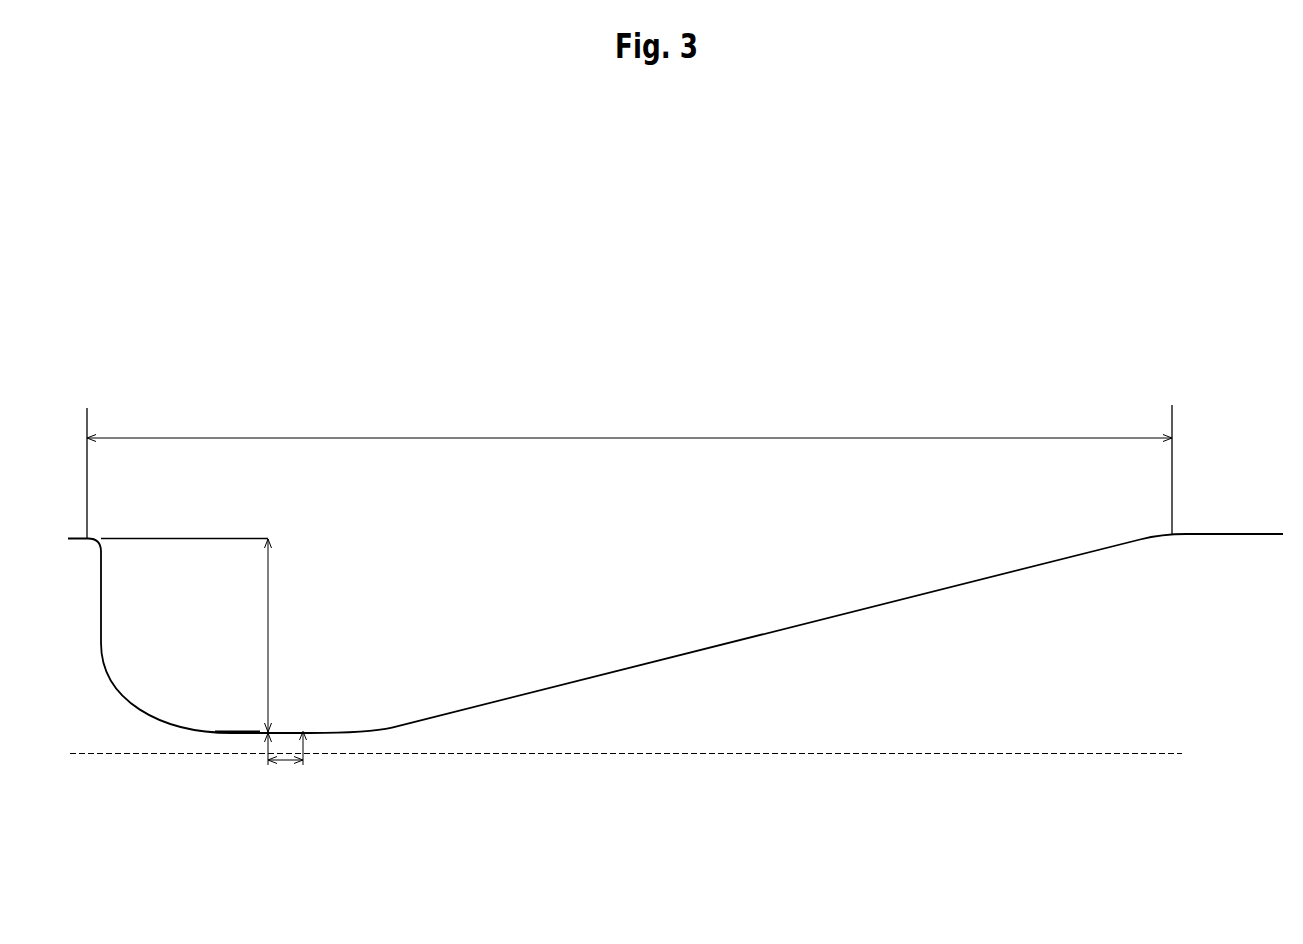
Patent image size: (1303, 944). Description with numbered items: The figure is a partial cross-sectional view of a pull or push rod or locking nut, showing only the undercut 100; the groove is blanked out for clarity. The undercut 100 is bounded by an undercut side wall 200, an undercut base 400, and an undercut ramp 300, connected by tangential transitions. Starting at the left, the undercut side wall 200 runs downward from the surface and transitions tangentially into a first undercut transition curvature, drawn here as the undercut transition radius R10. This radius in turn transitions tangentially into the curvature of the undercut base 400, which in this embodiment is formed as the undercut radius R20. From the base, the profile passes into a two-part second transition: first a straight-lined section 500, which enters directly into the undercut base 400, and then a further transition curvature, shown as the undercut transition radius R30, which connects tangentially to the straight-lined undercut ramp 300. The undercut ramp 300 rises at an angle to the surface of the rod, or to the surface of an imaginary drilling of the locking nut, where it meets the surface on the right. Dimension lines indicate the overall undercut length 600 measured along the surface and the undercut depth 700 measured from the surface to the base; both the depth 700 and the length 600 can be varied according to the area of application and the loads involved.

The undercut 100 is at (675, 517).
The undercut side wall 200 is at (101, 610).
The undercut ramp 300 is at (695, 651).
The undercut base 400 is at (227, 730).
The straight-lined section 500 is at (285, 761).
The undercut length 600 is at (629, 468).
The undercut depth 700 is at (213, 636).
The undercut transition radius R10 is at (127, 692).
The undercut radius R20 is at (220, 727).
The undercut transition radius R30 is at (353, 728).